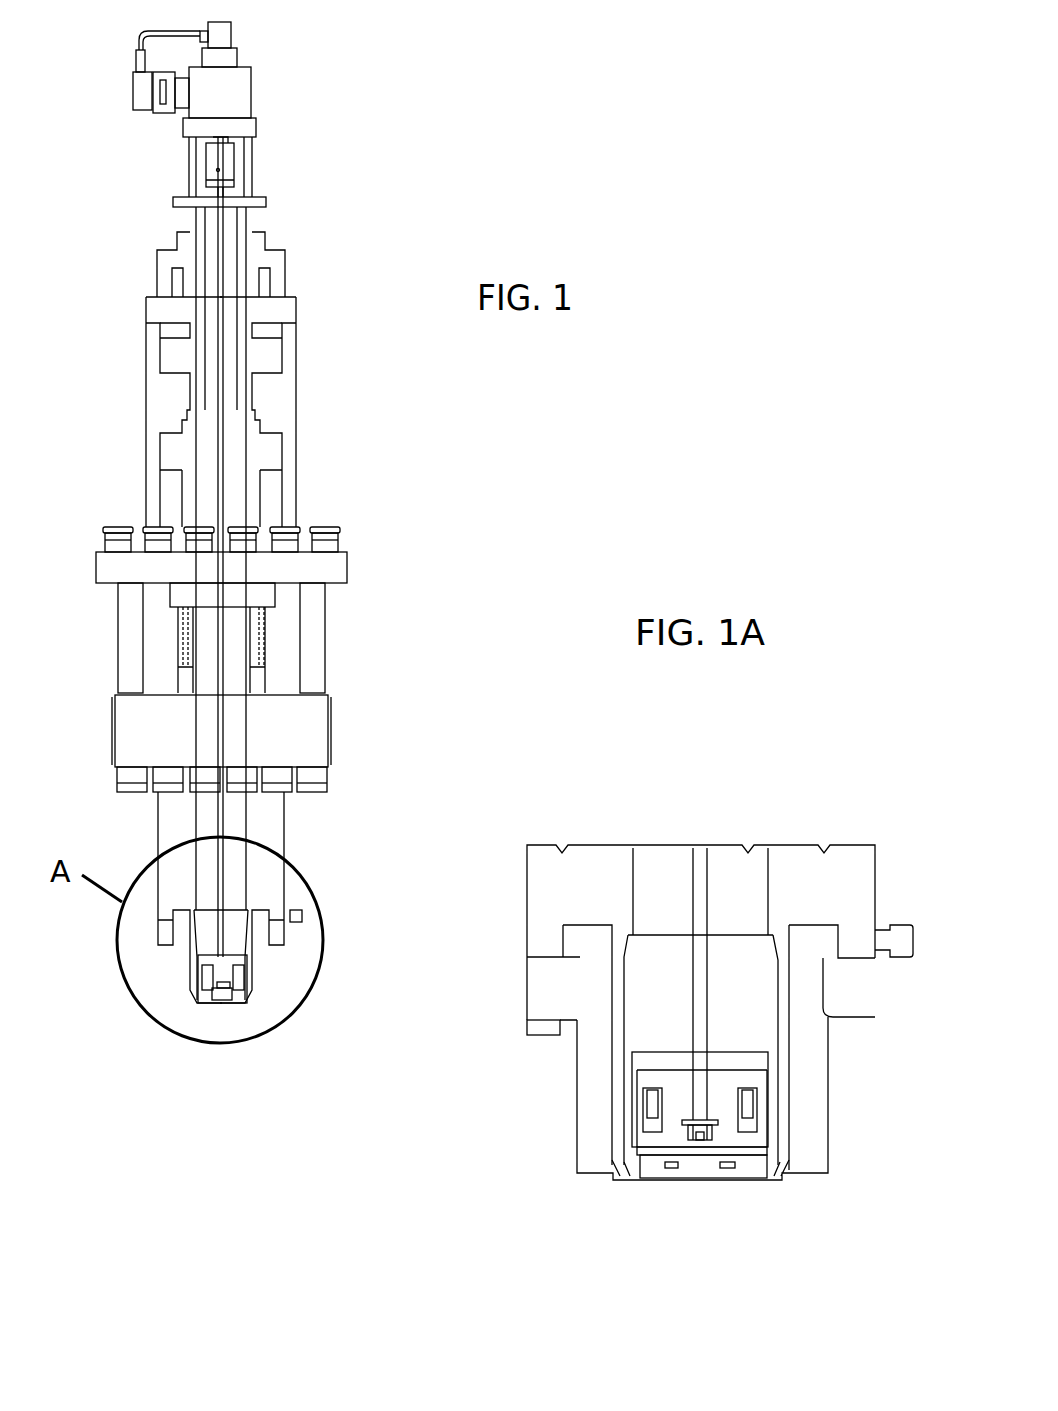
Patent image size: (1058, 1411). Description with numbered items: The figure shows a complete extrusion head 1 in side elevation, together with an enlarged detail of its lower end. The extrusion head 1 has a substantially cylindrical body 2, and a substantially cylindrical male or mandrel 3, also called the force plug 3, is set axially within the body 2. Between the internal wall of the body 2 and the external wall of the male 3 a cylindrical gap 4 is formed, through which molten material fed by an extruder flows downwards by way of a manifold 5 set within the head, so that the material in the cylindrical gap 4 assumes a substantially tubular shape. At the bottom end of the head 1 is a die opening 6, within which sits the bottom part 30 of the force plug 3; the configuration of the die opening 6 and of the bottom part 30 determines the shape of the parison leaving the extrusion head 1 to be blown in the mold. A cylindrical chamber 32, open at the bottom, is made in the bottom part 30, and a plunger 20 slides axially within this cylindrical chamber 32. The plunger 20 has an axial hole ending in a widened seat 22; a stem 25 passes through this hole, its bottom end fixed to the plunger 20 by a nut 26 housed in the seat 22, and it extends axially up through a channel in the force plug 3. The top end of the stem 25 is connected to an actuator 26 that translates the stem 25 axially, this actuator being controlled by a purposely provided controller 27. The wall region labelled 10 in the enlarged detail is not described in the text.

In FIG. 1, the extrusion head 1 is at (63, 374).
In FIG. 1, the body 2 is at (150, 458).
In FIG. 1A, the body 2 is at (552, 873).
In FIG. 1, the male or mandrel (force plug) 3 is at (235, 473).
In FIG. 1A, the male or mandrel (force plug) 3 is at (652, 880).
In FIG. 1, the cylindrical gap 4 is at (185, 526).
In FIG. 1, the manifold 5 is at (172, 355).
In FIG. 1, the die opening 6 is at (279, 970).
In FIG. 1A, the die opening 6 is at (839, 1141).
In FIG. 1A, the housing wall 10 is at (788, 1020).
In FIG. 1, the plunger 20 is at (203, 983).
In FIG. 1A, the plunger 20 is at (675, 1092).
In FIG. 1A, the widened seat 22 is at (712, 1140).
In FIG. 1, the stem 25 is at (223, 817).
In FIG. 1A, the stem 25 is at (710, 873).
In FIG. 1, the nut / actuator 26 is at (228, 160).
In FIG. 1A, the nut / actuator 26 is at (703, 1140).
In FIG. 1, the controller 27 is at (123, 95).
In FIG. 1, the bottom part of the force plug 30 is at (235, 932).
In FIG. 1A, the bottom part of the force plug 30 is at (632, 1012).
In FIG. 1A, the cylindrical chamber 32 is at (661, 1049).